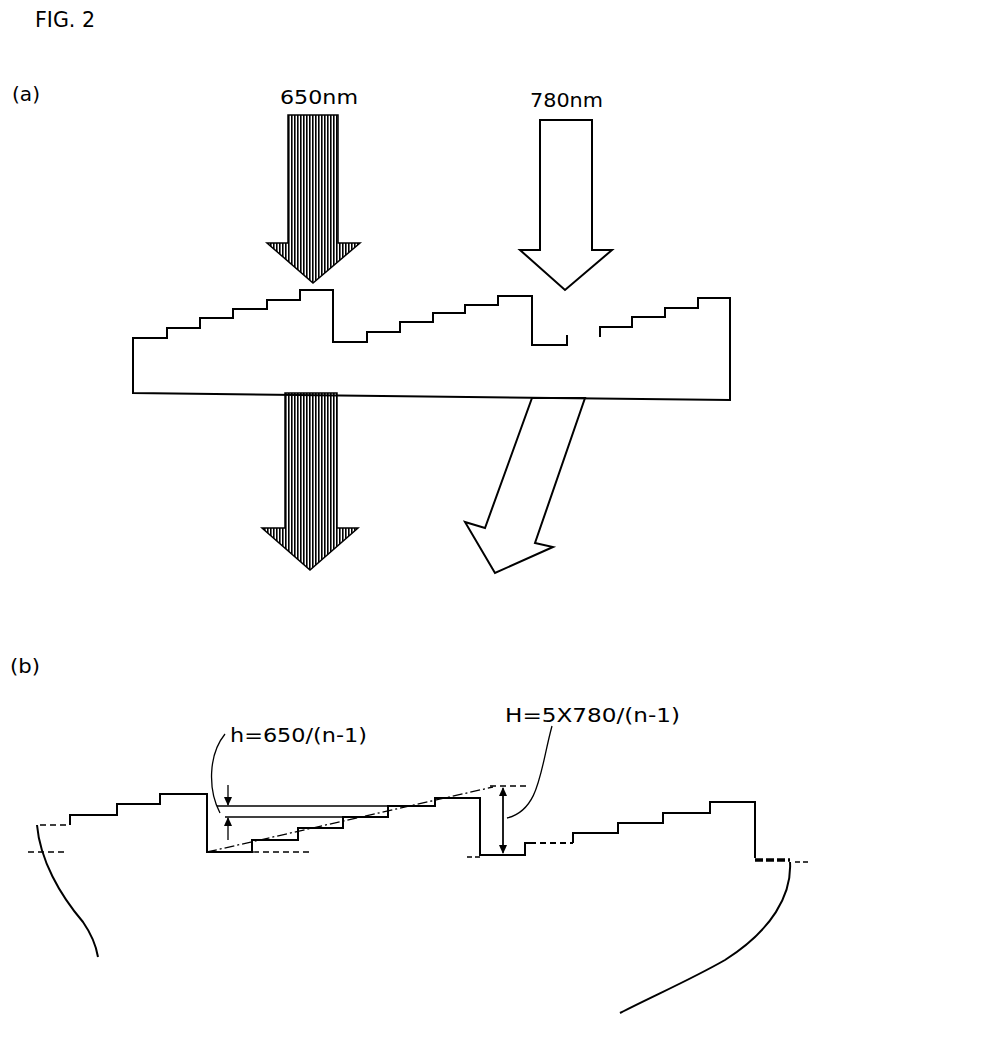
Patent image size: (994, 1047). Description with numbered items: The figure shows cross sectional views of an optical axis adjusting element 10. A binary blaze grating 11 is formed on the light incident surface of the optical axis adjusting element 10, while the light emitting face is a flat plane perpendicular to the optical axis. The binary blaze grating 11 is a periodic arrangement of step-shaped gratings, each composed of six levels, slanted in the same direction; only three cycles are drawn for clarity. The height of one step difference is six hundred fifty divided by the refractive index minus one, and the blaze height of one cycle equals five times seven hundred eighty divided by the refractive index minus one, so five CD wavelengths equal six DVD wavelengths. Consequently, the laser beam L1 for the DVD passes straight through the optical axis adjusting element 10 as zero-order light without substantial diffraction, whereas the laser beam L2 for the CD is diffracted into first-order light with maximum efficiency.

The optical axis adjusting element 10 is at (757, 307).
The binary blaze grating 11 is at (610, 298).
The laser beam for the DVD L1 is at (288, 195).
The laser beam for the CD L2 is at (592, 177).